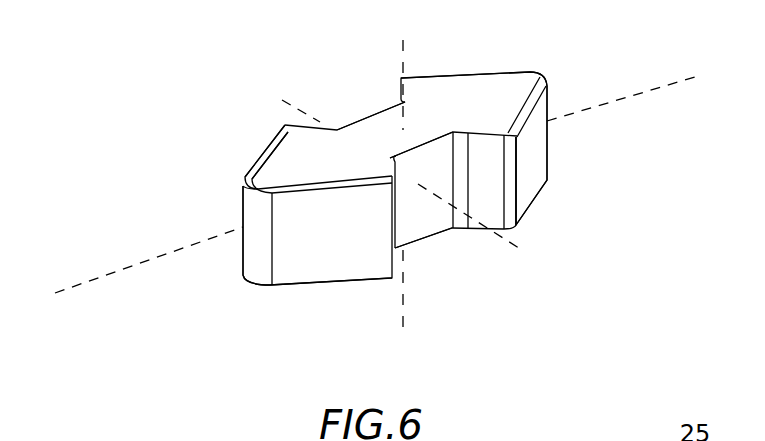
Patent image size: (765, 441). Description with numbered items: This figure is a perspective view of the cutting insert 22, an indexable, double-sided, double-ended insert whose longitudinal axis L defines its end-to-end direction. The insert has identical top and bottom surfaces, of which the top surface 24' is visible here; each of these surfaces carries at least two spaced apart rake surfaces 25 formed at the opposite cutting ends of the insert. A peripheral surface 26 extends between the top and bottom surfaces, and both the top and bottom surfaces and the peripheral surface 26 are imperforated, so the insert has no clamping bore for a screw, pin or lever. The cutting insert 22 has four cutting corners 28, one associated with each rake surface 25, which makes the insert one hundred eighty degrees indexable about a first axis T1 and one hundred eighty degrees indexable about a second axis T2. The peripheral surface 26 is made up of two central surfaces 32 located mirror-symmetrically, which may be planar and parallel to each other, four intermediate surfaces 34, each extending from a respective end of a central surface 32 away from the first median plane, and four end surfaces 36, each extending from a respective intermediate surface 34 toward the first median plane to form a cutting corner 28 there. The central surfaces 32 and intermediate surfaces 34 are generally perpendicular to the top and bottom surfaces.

The cutting insert 22 is at (272, 320).
The top surface 24' is at (504, 59).
The rake surface 25 is at (275, 165).
The peripheral surface 26 is at (507, 183).
The cutting corner 28 is at (238, 191).
The central surface 32 is at (352, 111).
The intermediate surface 34 is at (515, 223).
The end surface 36 is at (243, 165).
The longitudinal axis L is at (375, 186).
The first axis T1 is at (402, 163).
The second axis T2 is at (285, 95).